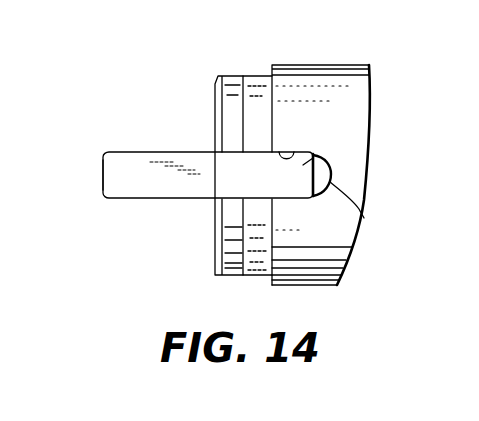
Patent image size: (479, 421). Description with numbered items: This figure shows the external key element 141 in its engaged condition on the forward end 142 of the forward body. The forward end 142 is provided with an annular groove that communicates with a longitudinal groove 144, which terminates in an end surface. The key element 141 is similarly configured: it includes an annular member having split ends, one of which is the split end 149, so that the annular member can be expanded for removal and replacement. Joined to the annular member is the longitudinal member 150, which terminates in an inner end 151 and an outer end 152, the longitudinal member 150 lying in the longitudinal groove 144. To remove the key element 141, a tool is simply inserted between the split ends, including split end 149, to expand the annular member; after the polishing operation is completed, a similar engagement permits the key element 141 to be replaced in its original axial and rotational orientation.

The key element 141 is at (258, 80).
The forward end 142 is at (216, 275).
The longitudinal groove 144 is at (294, 153).
The split end 149 is at (364, 218).
The longitudinal member 150 is at (136, 160).
The inner end 151 is at (333, 158).
The outer end 152 is at (102, 185).